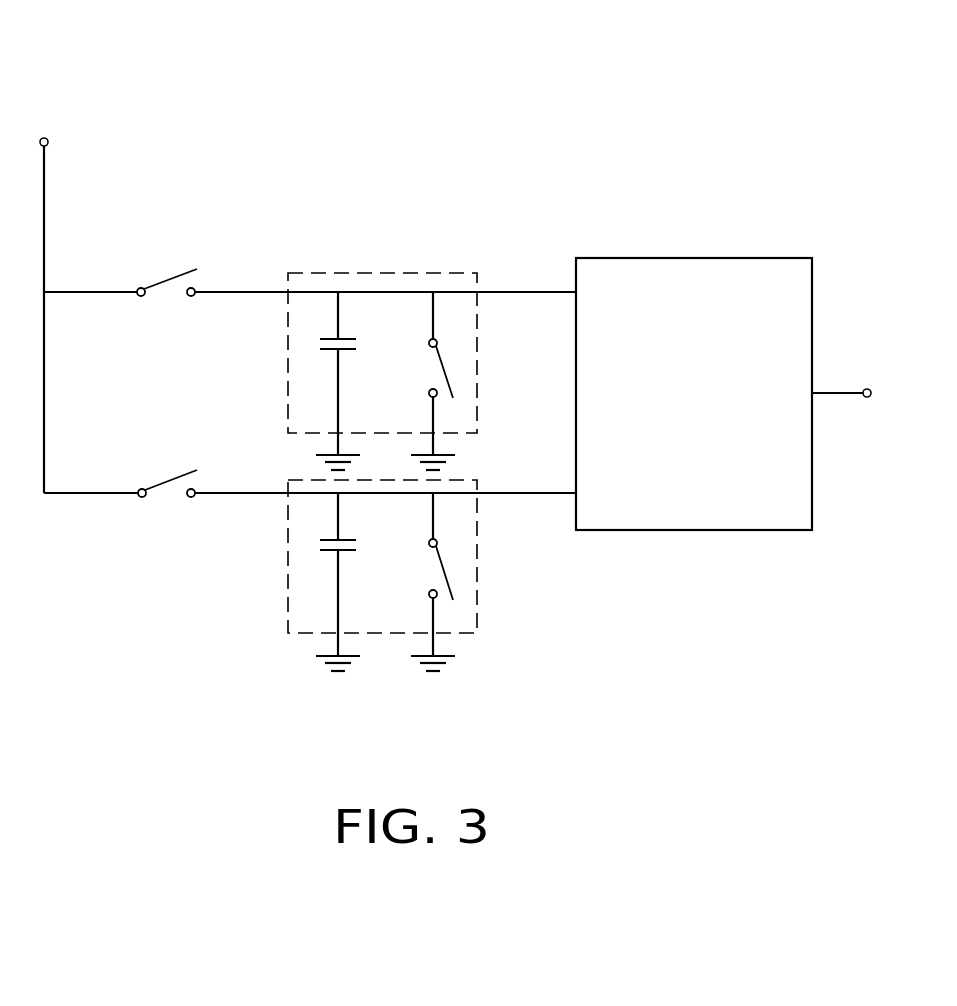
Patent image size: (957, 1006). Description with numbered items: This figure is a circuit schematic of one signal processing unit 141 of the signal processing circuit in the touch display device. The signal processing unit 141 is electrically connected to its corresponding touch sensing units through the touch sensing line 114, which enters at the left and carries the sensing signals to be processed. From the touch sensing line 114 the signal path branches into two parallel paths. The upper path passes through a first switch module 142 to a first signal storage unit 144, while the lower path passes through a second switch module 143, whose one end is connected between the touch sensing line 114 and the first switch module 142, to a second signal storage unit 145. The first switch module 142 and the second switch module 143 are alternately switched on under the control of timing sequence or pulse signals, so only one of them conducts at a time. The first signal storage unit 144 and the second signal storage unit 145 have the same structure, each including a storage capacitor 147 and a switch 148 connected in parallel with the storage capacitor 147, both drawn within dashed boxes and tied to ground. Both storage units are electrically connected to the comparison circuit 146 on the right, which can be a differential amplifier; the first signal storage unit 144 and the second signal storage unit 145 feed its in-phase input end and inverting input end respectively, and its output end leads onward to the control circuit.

The signal processing unit 141 is at (440, 60).
The touch sensing line 114 is at (44, 198).
The first switch module 142 is at (160, 278).
The second switch module 143 is at (168, 480).
The first signal storage unit 144 is at (396, 273).
The second signal storage unit 145 is at (467, 633).
The comparison circuit 146 is at (693, 257).
The storage capacitor 147 is at (323, 553).
The switch 148 is at (448, 571).